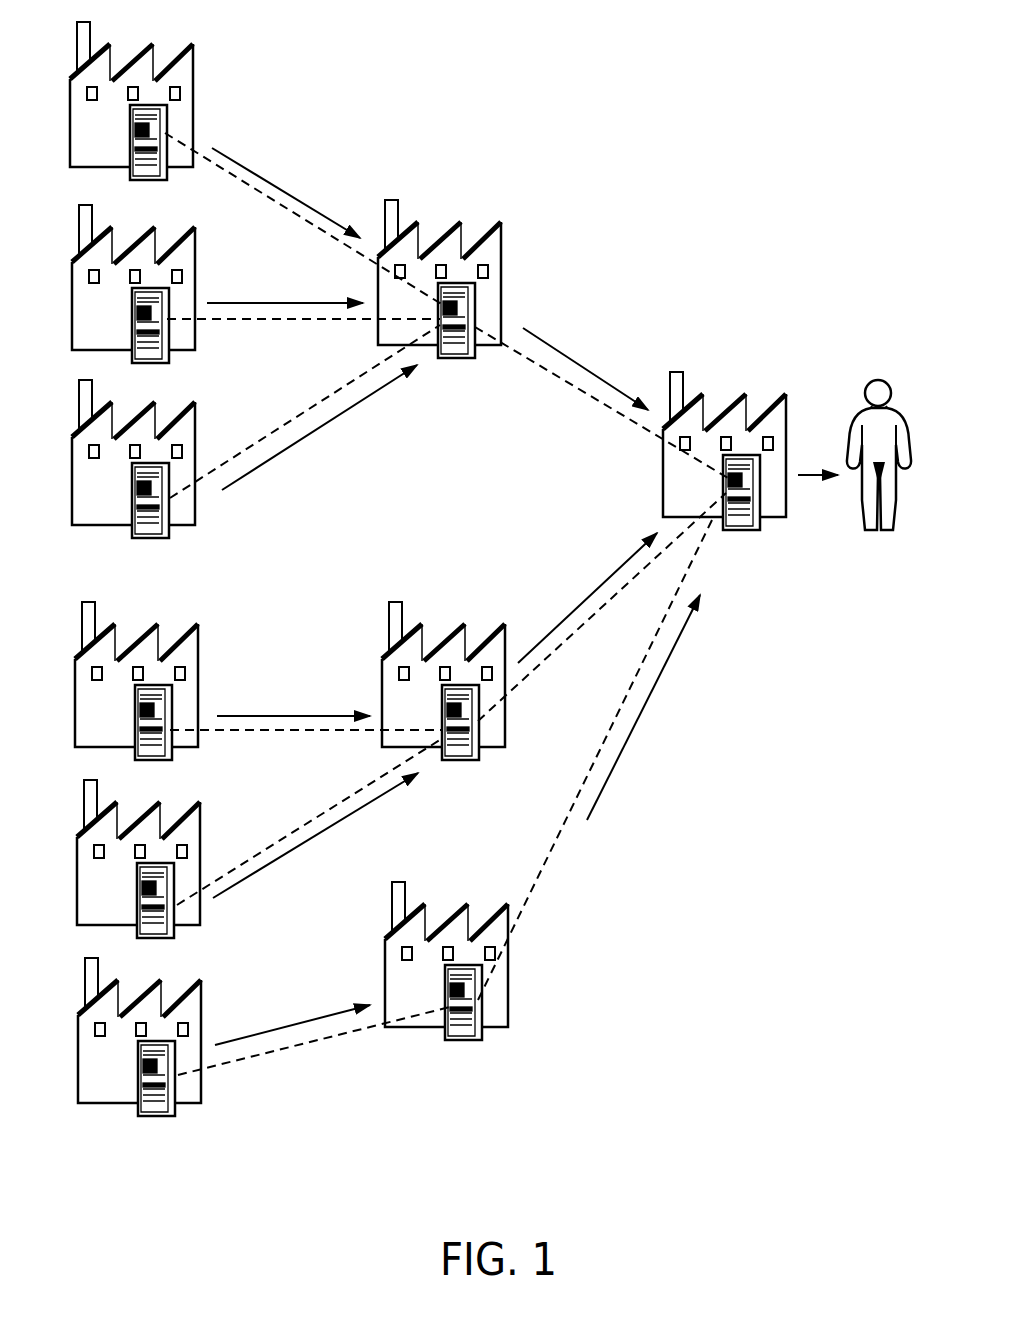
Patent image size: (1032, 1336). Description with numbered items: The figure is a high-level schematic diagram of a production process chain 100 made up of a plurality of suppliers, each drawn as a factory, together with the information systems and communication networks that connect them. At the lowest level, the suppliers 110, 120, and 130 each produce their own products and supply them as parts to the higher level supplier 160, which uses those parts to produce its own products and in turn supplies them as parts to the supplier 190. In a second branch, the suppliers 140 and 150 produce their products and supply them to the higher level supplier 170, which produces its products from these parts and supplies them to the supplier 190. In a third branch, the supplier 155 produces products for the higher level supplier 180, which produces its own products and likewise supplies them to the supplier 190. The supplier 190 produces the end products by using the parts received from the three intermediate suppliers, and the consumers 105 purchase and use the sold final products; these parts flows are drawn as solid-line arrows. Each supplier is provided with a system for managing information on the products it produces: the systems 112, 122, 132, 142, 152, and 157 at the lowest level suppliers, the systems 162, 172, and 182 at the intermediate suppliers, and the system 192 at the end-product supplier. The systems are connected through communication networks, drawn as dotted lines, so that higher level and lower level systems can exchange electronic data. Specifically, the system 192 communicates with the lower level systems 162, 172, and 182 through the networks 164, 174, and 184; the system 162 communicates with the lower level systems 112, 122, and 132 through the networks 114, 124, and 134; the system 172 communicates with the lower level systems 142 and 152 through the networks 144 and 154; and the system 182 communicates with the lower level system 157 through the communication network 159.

The production process chain 100 is at (716, 103).
The consumers 105 is at (863, 410).
The supplier 110 is at (140, 52).
The system 112 is at (130, 131).
The network 114 is at (281, 215).
The supplier 120 is at (140, 232).
The system 122 is at (132, 309).
The network 124 is at (283, 322).
The supplier 130 is at (141, 411).
The system 132 is at (132, 487).
The network 134 is at (300, 413).
The supplier 140 is at (143, 630).
The system 142 is at (135, 707).
The network 144 is at (262, 741).
The supplier 150 is at (143, 809).
The system 152 is at (137, 886).
The network 154 is at (342, 805).
The supplier 155 is at (144, 987).
The system 157 is at (138, 1064).
The communication network 159 is at (296, 1046).
The supplier 160 is at (444, 229).
The system 162 is at (453, 359).
The network 164 is at (567, 383).
The supplier 170 is at (448, 629).
The system 172 is at (460, 758).
The network 174 is at (579, 640).
The supplier 180 is at (454, 909).
The system 182 is at (465, 1041).
The network 184 is at (589, 766).
The supplier 190 is at (731, 402).
The system 192 is at (744, 535).